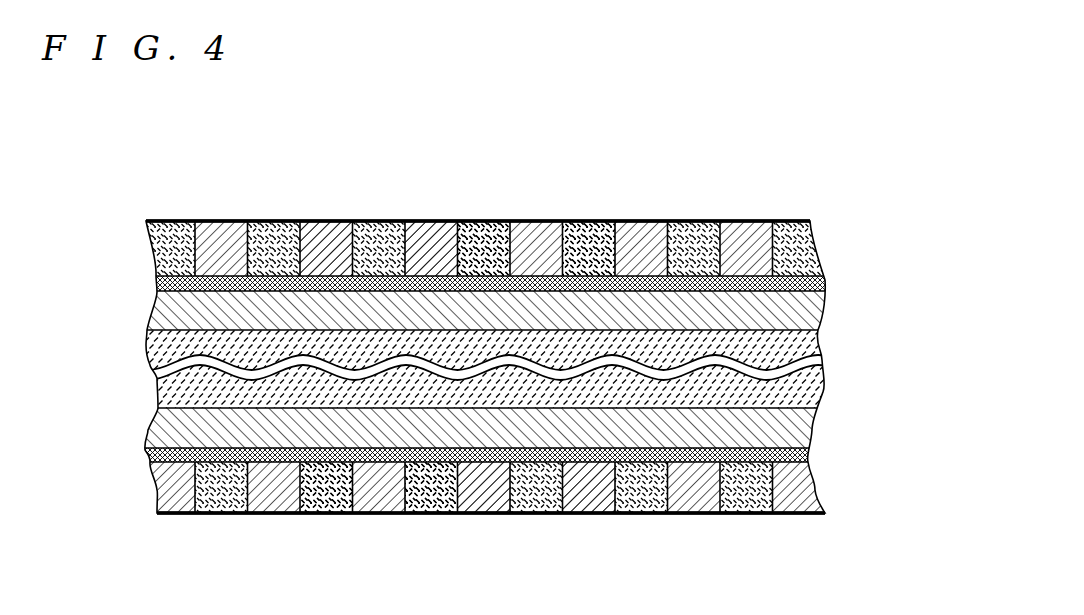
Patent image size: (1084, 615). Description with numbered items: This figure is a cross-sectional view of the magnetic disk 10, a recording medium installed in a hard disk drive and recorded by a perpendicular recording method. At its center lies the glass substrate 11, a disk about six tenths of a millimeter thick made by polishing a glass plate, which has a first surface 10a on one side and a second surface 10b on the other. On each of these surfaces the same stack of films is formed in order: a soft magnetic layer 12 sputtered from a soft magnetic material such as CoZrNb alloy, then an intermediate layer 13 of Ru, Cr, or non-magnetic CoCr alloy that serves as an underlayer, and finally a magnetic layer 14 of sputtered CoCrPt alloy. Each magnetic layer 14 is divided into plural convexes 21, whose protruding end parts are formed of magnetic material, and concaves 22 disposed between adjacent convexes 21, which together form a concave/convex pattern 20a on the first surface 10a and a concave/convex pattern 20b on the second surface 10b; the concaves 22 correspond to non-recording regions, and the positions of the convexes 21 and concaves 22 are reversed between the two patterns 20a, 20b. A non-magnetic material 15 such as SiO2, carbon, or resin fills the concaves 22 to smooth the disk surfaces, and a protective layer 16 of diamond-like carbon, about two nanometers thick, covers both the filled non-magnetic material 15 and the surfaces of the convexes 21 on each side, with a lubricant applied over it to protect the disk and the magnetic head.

The magnetic disk 10 is at (471, 158).
The first surface 10a is at (186, 207).
The second surface 10b is at (183, 526).
The glass substrate 11 is at (815, 340).
The soft magnetic layer 12 is at (812, 311).
The intermediate layer 13 is at (812, 284).
The magnetic layer 14 is at (760, 251).
The non-magnetic material 15 is at (701, 231).
The protective layer 16 is at (808, 221).
The concave/convex pattern 20a is at (618, 211).
The concave/convex pattern 20b is at (277, 518).
The convexes 21 is at (325, 253).
The concaves 22 is at (485, 254).